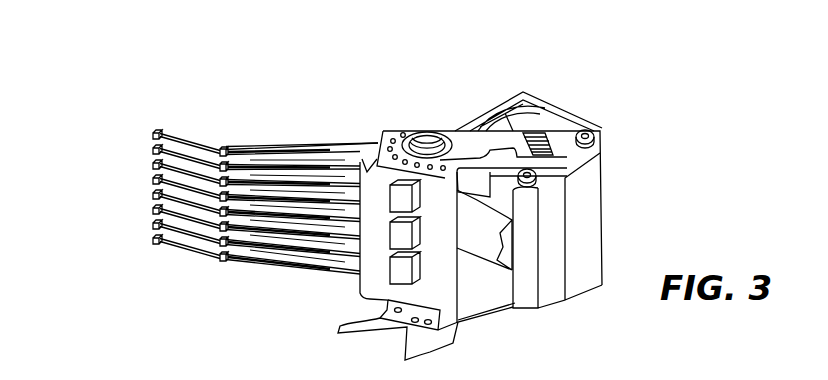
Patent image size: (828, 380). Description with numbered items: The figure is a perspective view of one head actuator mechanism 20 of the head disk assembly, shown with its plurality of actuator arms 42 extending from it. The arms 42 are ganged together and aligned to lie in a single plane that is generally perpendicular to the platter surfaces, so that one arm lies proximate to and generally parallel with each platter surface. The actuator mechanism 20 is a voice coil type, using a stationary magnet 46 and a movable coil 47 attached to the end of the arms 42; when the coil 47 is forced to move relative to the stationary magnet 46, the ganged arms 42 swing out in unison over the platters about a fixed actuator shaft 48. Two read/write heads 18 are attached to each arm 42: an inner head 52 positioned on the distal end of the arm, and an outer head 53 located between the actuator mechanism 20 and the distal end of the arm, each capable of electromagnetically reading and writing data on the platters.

The read/write heads 18 is at (150, 175).
The head actuator mechanism 20 is at (607, 170).
The actuator arms 42 is at (305, 143).
The stationary magnet 46 is at (562, 142).
The movable coil 47 is at (538, 135).
The fixed actuator shaft 48 is at (430, 131).
The inner head 52 is at (150, 164).
The outer head 53 is at (224, 150).